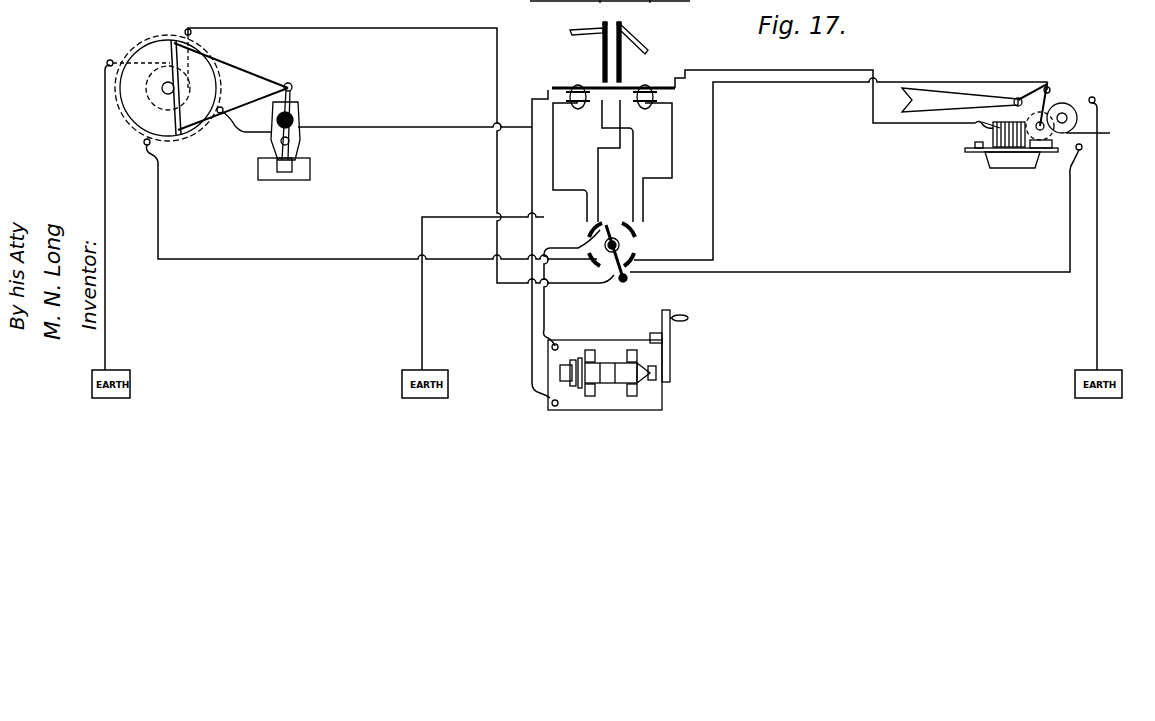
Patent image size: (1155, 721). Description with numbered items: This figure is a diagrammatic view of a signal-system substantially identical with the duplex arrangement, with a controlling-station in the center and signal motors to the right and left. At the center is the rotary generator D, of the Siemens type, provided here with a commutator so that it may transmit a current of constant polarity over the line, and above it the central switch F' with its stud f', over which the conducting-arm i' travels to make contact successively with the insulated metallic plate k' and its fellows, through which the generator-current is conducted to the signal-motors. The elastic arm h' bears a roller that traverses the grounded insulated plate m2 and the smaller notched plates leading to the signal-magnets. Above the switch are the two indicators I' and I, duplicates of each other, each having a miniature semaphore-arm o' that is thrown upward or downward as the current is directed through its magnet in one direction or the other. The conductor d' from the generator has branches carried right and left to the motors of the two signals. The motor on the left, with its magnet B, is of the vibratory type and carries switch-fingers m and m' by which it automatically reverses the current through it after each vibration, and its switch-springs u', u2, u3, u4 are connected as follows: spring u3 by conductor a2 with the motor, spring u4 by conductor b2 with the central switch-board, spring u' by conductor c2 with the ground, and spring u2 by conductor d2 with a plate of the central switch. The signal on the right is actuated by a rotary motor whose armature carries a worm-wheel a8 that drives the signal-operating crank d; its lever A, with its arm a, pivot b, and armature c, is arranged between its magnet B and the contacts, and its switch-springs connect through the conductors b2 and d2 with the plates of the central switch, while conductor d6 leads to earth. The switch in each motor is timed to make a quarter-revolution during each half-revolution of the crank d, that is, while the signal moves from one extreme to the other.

The switch-spring u' is at (603, 86).
The switch-spring u2 is at (656, 84).
The switch-spring u3 is at (646, 142).
The switch-spring u4 is at (598, 115).
The lever arm m is at (231, 65).
The lever arm m' is at (233, 109).
The electromagnet B is at (658, 131).
The conductor a2 is at (631, 149).
The conductor d' is at (645, 216).
The conductor d2 is at (633, 150).
The conductor b2 is at (597, 167).
The conductor c2 is at (115, 217).
The semaphore-arm o' is at (619, 31).
The left indicator I' is at (596, 52).
The right indicator I is at (633, 52).
The arm h' is at (585, 232).
The insulated plate m2 is at (640, 222).
The stud f' is at (616, 246).
The commutator switch F' is at (631, 245).
The metallic plate k' is at (649, 253).
The conducting-arm i' is at (611, 263).
The generator D is at (618, 360).
The signal-operating crank d is at (767, 249).
The lever a is at (960, 100).
The lever pivot b is at (1009, 92).
The lever assembly A is at (1043, 68).
The armature c is at (1045, 84).
The worm-wheel a8 is at (983, 118).
The earth wire d6 is at (1106, 236).